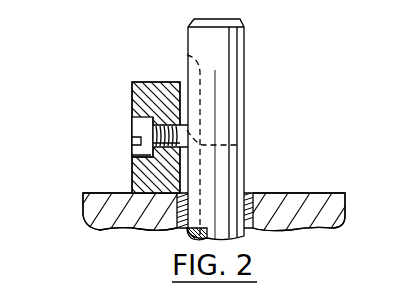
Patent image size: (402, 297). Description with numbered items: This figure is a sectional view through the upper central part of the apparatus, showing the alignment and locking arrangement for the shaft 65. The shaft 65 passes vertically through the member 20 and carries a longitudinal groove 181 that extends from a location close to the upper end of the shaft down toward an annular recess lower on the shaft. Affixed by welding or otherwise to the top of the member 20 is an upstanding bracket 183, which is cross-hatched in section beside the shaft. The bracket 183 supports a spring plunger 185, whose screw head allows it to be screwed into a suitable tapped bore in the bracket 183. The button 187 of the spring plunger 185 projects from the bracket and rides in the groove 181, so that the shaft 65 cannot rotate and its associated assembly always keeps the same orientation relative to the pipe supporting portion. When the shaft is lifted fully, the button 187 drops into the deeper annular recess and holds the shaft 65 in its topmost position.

The member 20 is at (101, 211).
The shaft 65 is at (236, 62).
The longitudinal groove 181 is at (195, 78).
The upstanding bracket 183 is at (133, 169).
The spring plunger 185 is at (138, 128).
The button 187 is at (240, 145).